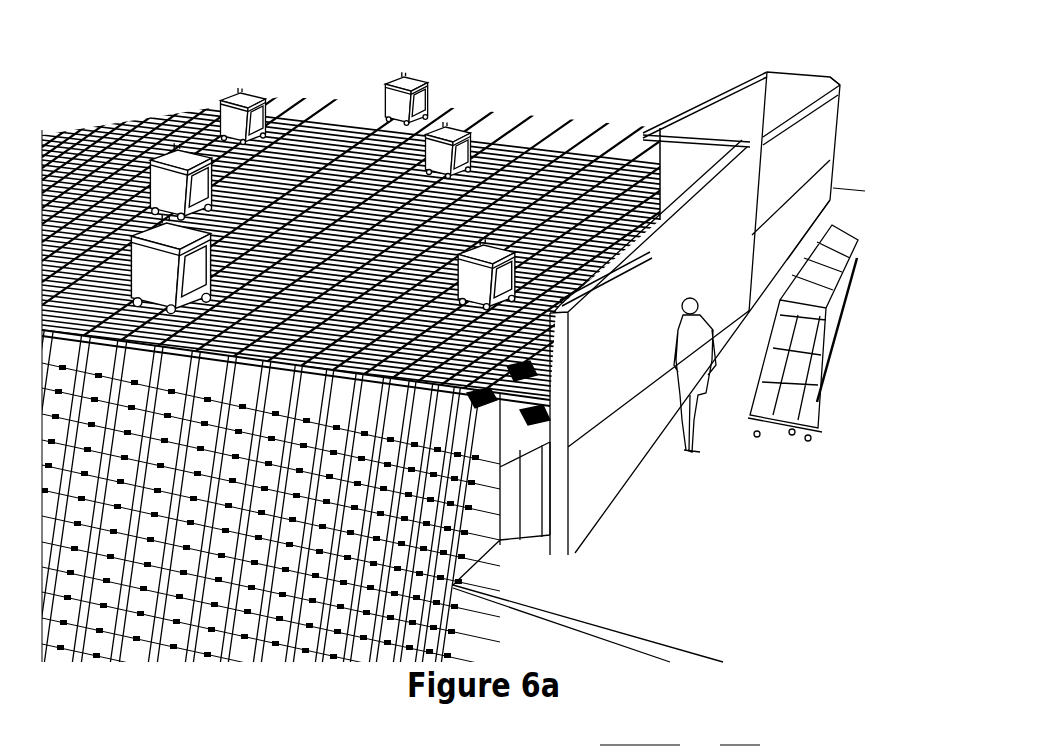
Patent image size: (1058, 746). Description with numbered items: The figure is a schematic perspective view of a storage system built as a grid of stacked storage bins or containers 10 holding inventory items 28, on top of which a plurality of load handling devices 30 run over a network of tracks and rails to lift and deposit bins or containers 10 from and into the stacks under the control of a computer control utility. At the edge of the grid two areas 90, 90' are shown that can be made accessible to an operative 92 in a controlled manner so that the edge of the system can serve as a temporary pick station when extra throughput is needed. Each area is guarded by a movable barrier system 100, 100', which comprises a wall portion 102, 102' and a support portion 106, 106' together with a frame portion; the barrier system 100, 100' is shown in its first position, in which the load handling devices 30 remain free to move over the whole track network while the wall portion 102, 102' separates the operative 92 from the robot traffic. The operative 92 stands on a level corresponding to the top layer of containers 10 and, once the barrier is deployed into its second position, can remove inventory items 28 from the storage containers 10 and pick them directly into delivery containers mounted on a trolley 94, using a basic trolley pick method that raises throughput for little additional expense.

The storage bins or containers 10 is at (133, 595).
The inventory items 28 is at (483, 415).
The load handling devices 30 is at (462, 128).
The area accessible to an operative 90 is at (602, 187).
The area accessible to an operative 90' is at (692, 127).
The operative 92 is at (688, 460).
The trolley 94 is at (802, 435).
The movable barrier system 100 is at (690, 367).
The movable barrier system 100' is at (813, 158).
The wall portion 102 is at (831, 205).
The wall portion 102' is at (865, 110).
The support portion 106 is at (640, 734).
The support portion 106' is at (766, 711).